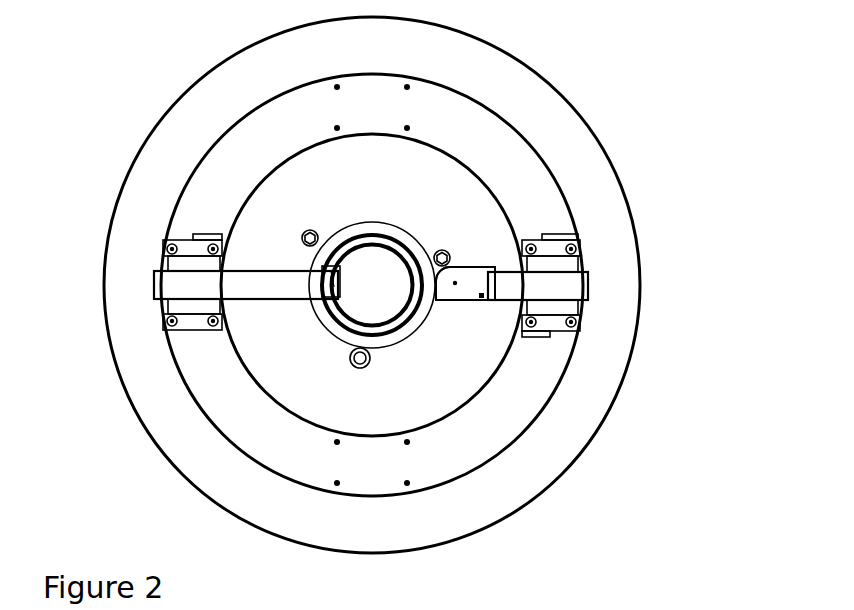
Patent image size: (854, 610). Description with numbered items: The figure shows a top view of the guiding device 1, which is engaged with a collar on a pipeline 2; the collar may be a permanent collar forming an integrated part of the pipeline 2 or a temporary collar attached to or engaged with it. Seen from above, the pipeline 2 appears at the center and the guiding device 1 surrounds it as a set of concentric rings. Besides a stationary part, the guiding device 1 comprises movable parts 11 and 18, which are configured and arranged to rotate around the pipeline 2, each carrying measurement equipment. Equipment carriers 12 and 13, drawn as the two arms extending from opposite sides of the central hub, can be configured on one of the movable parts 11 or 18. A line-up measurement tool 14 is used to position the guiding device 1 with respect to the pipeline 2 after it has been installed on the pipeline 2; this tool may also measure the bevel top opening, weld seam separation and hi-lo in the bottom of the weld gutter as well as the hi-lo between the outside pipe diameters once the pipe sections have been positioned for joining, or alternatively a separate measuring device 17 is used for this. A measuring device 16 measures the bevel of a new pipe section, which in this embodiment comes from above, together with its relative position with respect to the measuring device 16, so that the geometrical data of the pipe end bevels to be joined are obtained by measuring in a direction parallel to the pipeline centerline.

The guiding device 1 is at (622, 478).
The pipeline 2 is at (378, 240).
The movable part 11 is at (483, 438).
The equipment carrier 12 is at (181, 284).
The equipment carrier 13 is at (573, 287).
The line-up measurement tool 14 is at (487, 272).
The measuring device 16 is at (304, 230).
The separate measuring device 17 is at (487, 272).
The movable part 18 is at (122, 262).